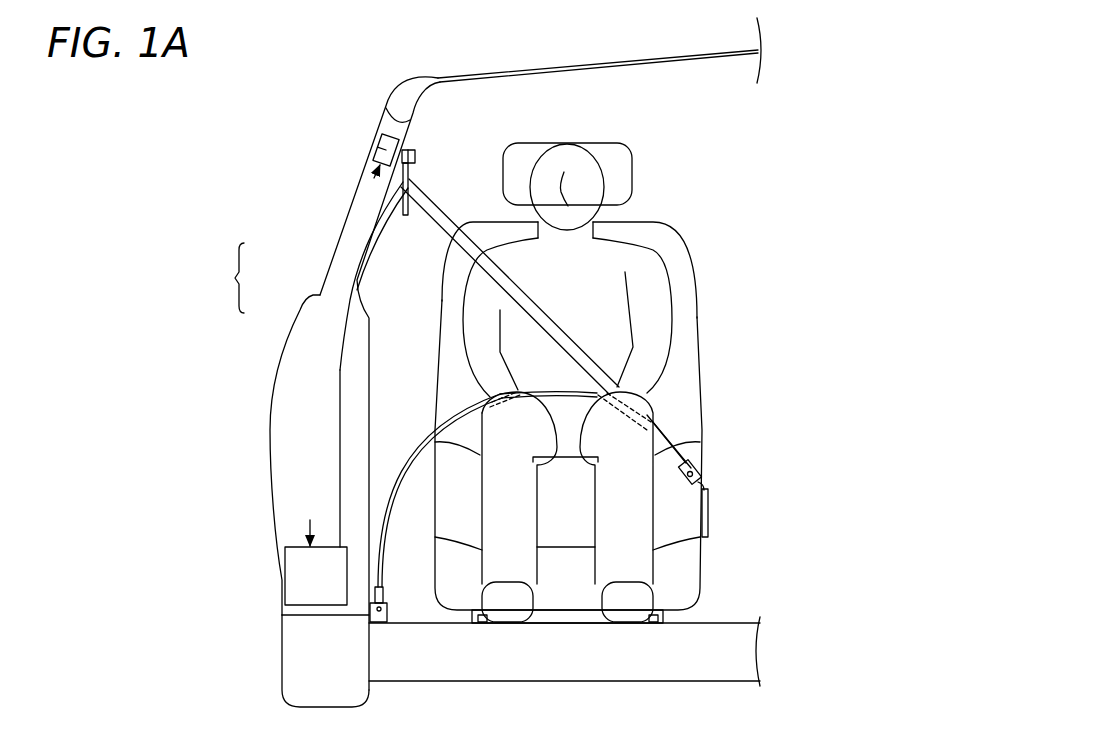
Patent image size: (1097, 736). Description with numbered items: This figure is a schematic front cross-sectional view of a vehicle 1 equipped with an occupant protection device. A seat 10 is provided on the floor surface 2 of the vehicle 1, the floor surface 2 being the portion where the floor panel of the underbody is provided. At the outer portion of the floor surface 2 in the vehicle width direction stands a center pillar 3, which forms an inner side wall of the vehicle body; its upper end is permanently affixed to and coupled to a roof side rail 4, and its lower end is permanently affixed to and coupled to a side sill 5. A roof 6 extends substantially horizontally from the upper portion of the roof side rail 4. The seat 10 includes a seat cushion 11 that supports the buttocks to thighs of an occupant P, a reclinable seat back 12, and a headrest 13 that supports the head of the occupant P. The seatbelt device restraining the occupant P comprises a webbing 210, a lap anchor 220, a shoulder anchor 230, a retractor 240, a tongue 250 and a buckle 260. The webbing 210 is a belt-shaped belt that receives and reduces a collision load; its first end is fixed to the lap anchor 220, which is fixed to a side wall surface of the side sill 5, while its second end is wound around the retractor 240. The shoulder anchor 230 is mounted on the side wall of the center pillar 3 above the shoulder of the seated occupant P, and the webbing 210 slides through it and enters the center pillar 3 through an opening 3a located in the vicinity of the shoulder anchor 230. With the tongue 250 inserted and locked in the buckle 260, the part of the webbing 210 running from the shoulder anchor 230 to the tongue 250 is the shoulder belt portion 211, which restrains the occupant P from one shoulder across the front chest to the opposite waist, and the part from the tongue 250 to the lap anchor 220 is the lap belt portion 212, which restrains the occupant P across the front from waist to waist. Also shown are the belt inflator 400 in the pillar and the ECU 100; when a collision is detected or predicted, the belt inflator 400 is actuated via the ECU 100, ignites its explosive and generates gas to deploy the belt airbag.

The vehicle 1 is at (672, 48).
The floor surface 2 is at (695, 623).
The center pillar 3 is at (287, 413).
The opening 3a is at (362, 233).
The roof side rail 4 is at (407, 100).
The side sill 5 is at (297, 677).
The roof 6 is at (557, 63).
The seat 10 is at (699, 316).
The seat cushion 11 is at (693, 577).
The seat back 12 is at (673, 288).
The headrest 13 is at (623, 174).
The ECU 100 is at (293, 127).
The webbing 210 is at (223, 278).
The shoulder belt portion 211 is at (440, 233).
The lap belt portion 212 is at (395, 483).
The lap anchor 220 is at (385, 612).
The shoulder anchor 230 is at (410, 165).
The retractor 240 is at (297, 583).
The tongue 250 is at (700, 462).
The buckle 260 is at (708, 487).
The belt inflator 400 is at (380, 140).
The occupant P is at (578, 147).